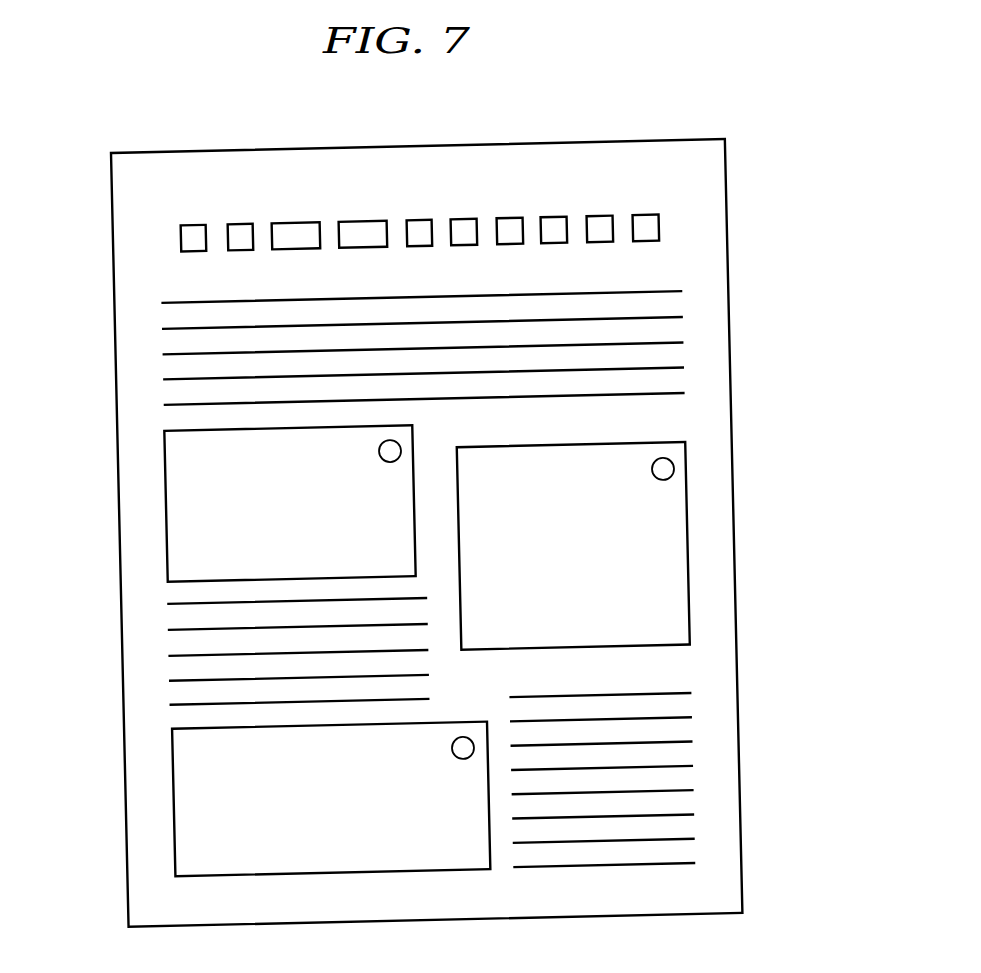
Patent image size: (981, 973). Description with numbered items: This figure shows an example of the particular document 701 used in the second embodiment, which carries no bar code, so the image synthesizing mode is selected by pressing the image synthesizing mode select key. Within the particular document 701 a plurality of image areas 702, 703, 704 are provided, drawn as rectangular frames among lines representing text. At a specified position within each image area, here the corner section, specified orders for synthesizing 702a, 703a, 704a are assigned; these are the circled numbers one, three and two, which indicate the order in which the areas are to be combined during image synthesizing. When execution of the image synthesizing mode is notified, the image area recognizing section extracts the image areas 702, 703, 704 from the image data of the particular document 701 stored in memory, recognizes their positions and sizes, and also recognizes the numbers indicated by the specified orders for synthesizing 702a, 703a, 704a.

The particular document 701 is at (592, 132).
The image area 702 is at (173, 465).
The specified order for synthesizing 702a is at (402, 449).
The image area 703 is at (673, 538).
The specified order for synthesizing 703a is at (654, 461).
The image area 704 is at (178, 772).
The specified order for synthesizing 704a is at (463, 737).